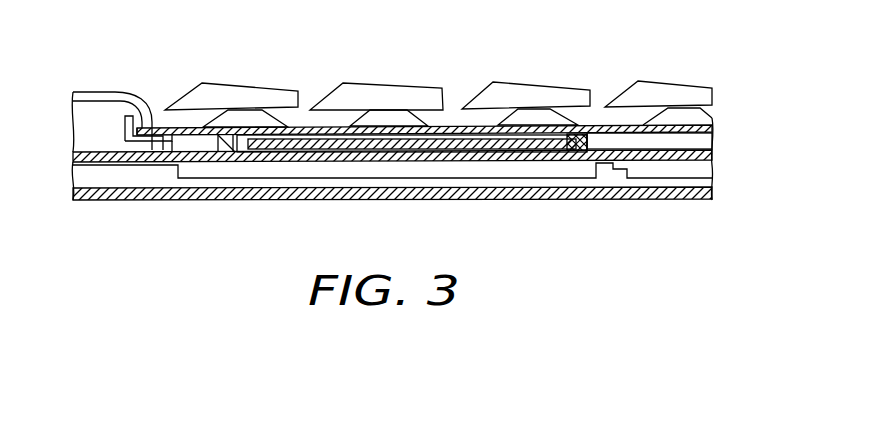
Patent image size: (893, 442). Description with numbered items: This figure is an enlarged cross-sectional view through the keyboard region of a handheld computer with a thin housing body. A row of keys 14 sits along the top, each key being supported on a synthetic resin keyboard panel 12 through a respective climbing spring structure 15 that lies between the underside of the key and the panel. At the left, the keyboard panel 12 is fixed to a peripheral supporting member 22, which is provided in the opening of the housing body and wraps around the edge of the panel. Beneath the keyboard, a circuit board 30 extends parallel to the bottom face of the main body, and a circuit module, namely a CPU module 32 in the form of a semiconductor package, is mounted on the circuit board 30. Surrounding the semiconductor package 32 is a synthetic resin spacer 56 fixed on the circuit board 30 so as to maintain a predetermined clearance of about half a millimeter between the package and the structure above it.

The keyboard panel 12 is at (593, 128).
The keys 14 is at (350, 88).
The climbing spring structure 15 is at (406, 111).
The peripheral supporting member 22 is at (122, 100).
The circuit board 30 is at (712, 150).
The CPU module 32 is at (485, 142).
The spacer 56 is at (223, 147).